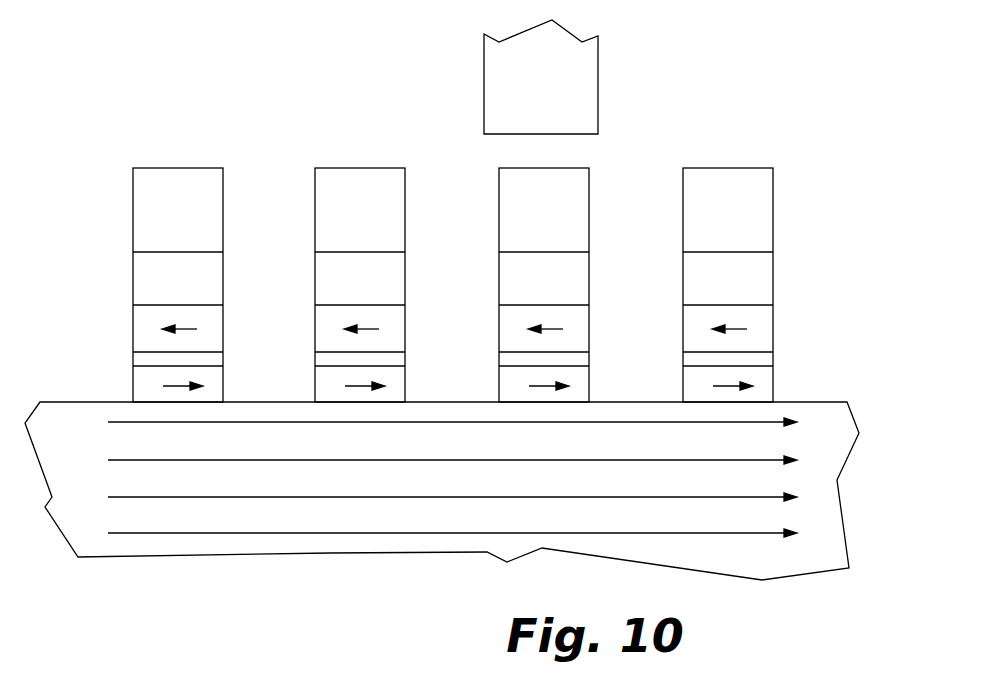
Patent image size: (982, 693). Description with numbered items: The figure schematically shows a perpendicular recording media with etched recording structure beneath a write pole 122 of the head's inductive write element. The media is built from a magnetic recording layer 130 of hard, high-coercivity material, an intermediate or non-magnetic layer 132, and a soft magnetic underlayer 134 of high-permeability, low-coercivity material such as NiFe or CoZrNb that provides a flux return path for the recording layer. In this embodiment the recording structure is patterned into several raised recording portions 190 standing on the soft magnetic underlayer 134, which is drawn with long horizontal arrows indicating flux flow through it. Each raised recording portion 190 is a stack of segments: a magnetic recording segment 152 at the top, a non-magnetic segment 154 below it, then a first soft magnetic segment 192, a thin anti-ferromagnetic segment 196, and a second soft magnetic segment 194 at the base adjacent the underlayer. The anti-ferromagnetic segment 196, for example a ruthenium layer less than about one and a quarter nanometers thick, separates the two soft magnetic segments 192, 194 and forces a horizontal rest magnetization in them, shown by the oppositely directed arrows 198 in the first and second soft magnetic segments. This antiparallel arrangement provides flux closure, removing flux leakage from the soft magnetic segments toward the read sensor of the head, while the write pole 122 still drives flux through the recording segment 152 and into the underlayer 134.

The write pole 122 is at (600, 70).
The magnetic recording layer 130 is at (780, 198).
The intermediate or non-magnetic layer 132 is at (765, 283).
The soft magnetic underlayer 134 is at (800, 395).
The magnetic recording segment 152 is at (156, 222).
The non-magnetic segment 154 is at (156, 292).
The raised recording portions 190 is at (169, 166).
The first soft magnetic segment 192 is at (139, 329).
The second soft magnetic segment 194 is at (137, 384).
The anti-ferromagnetic segment 196 is at (137, 361).
The arrows 198 is at (177, 386).